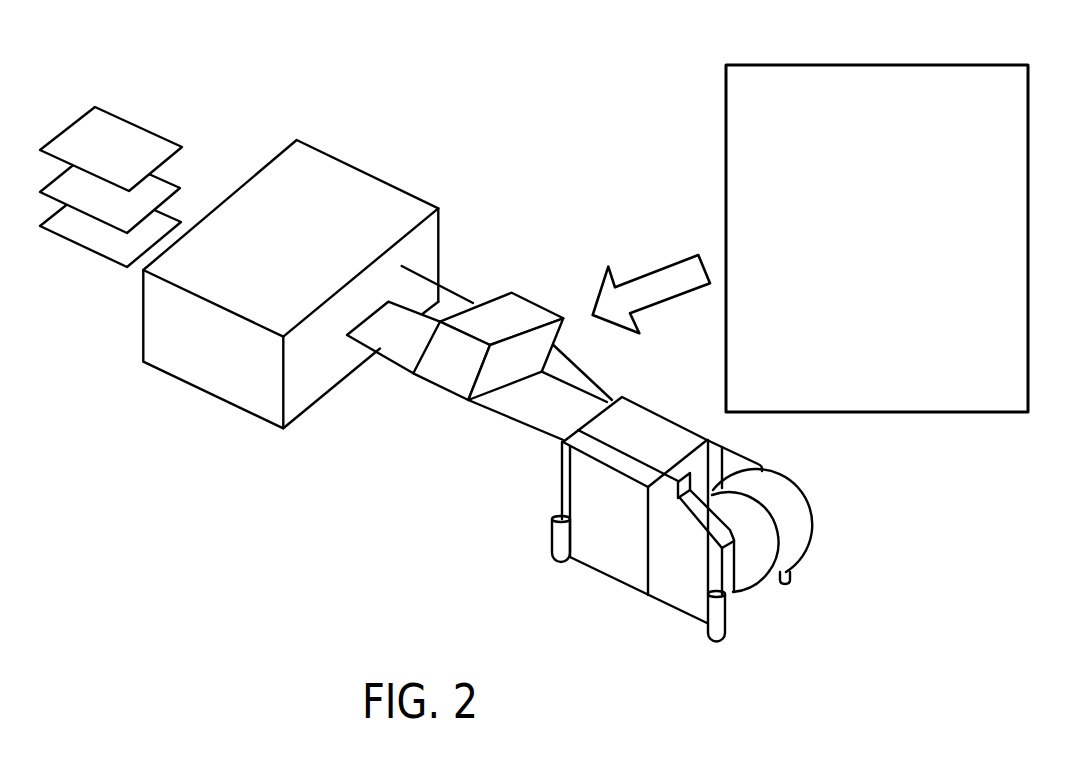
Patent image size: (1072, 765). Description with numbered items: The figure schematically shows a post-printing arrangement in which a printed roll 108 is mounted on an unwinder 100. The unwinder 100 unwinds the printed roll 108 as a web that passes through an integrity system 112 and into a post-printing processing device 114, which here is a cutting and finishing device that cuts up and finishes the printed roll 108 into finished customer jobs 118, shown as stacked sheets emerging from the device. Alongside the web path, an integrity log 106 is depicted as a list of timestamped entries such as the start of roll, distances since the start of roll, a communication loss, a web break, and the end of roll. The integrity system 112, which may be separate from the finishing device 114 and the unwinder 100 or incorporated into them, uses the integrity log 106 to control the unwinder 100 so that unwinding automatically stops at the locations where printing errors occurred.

The unwinder 100 is at (625, 627).
The integrity log 106 is at (878, 413).
The printed roll 108 is at (798, 522).
The integrity system 112 is at (486, 272).
The post-printing processing device 114 is at (217, 383).
The finished customer jobs 118 is at (123, 137).